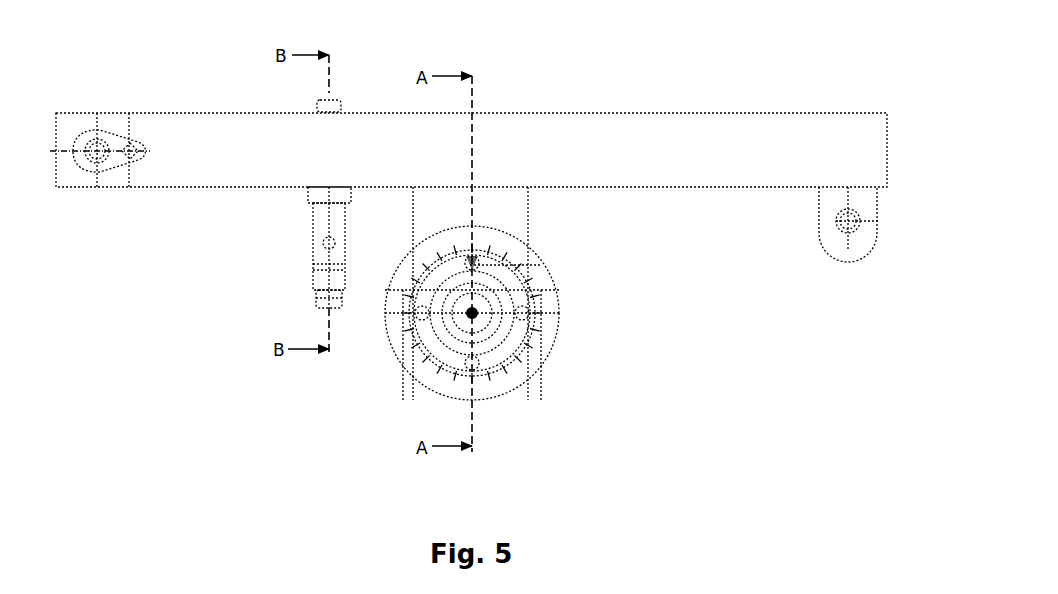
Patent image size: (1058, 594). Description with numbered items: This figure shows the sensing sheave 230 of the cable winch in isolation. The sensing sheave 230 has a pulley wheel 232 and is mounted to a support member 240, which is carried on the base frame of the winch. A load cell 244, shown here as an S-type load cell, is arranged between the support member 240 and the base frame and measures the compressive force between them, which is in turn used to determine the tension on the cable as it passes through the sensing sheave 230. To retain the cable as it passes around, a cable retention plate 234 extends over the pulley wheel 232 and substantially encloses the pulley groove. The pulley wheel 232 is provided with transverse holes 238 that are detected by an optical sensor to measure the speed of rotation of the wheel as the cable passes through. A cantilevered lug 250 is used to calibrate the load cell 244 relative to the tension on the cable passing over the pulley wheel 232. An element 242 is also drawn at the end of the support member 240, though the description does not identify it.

The sensing sheave 230 is at (519, 325).
The pulley wheel 232 is at (500, 385).
The cable retention plate 234 is at (520, 203).
The transverse holes 238 is at (460, 360).
The support member 240 is at (664, 139).
The pivot bracket 242 is at (100, 137).
The load cell 244 is at (288, 283).
The cantilevered lug 250 is at (848, 248).